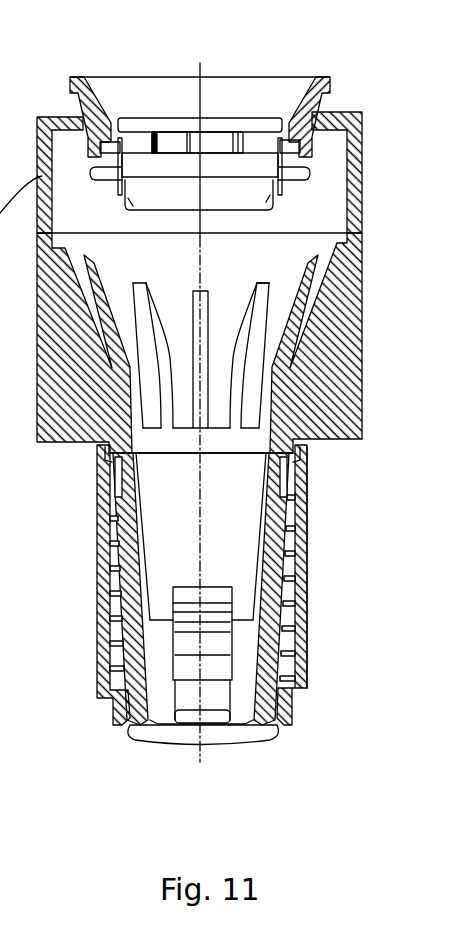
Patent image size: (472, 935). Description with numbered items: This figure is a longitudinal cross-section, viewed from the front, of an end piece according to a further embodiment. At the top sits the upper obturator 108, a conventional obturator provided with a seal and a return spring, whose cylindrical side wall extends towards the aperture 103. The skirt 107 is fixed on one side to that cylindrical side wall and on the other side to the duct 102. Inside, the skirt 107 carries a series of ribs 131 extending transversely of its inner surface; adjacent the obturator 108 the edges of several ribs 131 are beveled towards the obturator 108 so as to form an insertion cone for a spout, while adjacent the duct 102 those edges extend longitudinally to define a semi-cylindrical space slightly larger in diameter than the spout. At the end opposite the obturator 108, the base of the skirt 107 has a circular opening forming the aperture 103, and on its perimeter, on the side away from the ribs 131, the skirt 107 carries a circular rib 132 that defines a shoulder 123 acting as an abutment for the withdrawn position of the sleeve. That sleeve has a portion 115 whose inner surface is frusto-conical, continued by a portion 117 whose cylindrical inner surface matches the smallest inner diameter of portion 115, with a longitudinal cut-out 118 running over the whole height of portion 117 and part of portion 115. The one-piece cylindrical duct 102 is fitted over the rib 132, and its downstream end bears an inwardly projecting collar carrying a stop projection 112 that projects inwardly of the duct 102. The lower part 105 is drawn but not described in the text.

The duct 102 is at (309, 513).
The aperture 103 is at (222, 437).
The outer sleeve 105 is at (307, 603).
The skirt 107 is at (343, 333).
The upper obturator 108 is at (243, 125).
The stop projection 112 is at (195, 717).
The portion of the sleeve with frusto-conical inner surface 115 is at (290, 500).
The portion of the sleeve with cylindrical inner surface 117 is at (288, 657).
The longitudinal cut-out 118 is at (190, 587).
The shoulder 123 is at (272, 455).
The ribs 131 is at (259, 281).
The circular rib 132 is at (113, 450).